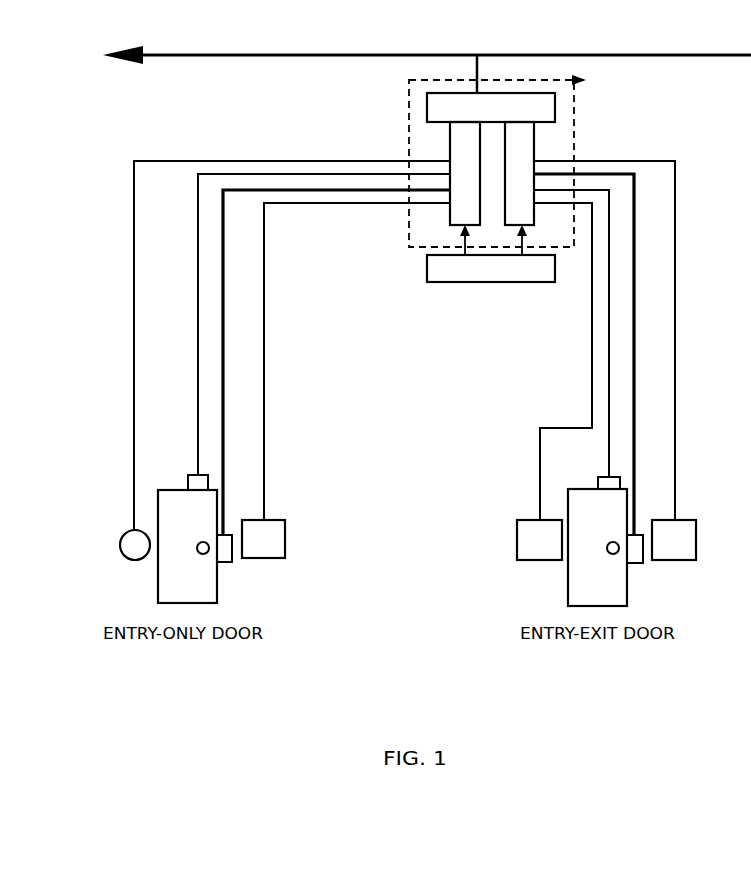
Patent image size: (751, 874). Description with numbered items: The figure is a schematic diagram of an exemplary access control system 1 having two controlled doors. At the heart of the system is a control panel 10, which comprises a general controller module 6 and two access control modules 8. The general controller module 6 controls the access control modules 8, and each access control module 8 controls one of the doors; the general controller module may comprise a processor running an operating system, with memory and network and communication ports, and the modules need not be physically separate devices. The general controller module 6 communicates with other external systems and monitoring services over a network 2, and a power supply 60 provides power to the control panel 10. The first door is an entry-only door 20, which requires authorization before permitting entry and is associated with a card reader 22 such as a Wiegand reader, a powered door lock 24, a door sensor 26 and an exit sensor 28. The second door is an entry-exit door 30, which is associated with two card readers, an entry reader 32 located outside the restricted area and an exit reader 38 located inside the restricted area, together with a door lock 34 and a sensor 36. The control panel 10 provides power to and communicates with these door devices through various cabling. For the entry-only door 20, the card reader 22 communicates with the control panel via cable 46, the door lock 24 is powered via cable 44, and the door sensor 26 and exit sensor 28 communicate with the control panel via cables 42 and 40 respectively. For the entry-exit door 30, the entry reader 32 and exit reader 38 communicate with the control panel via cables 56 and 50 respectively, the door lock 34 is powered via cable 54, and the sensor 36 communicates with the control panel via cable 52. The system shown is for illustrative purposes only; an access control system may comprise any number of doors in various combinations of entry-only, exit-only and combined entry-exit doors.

The access control system 1 is at (378, 645).
The network 2 is at (684, 55).
The general controller module 6 is at (491, 107).
The access control module 8 is at (492, 173).
The control panel 10 is at (408, 118).
The entry-only door 20 is at (158, 578).
The card reader 22 is at (285, 540).
The powered door lock 24 is at (221, 562).
The door sensor 26 is at (190, 475).
The exit sensor 28 is at (120, 540).
The entry-exit door 30 is at (568, 580).
The entry reader 32 is at (696, 540).
The door lock 34 is at (634, 563).
The sensor 36 is at (598, 477).
The exit reader 38 is at (517, 540).
The cable 40 is at (134, 256).
The cable 42 is at (198, 288).
The cable 44 is at (223, 308).
The cable 46 is at (264, 359).
The cable 50 is at (592, 352).
The cable 52 is at (609, 392).
The cable 54 is at (636, 388).
The cable 56 is at (675, 428).
The power supply 60 is at (427, 276).